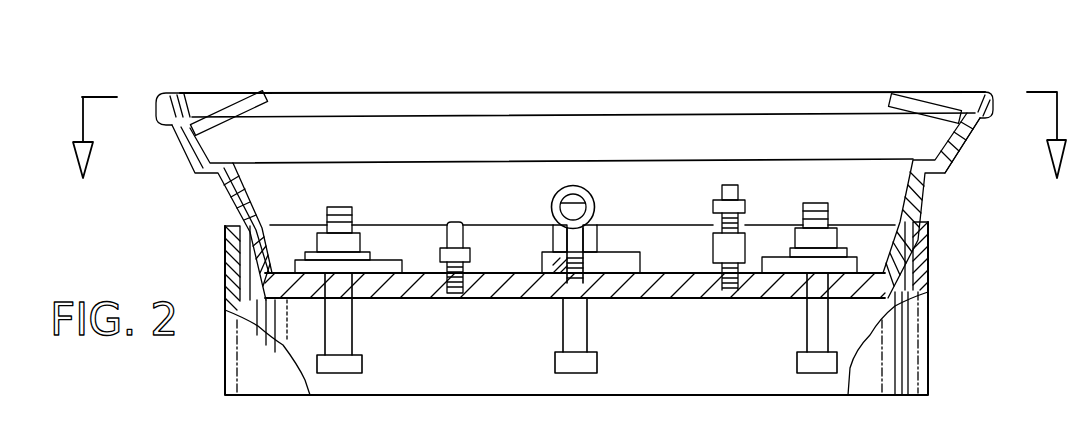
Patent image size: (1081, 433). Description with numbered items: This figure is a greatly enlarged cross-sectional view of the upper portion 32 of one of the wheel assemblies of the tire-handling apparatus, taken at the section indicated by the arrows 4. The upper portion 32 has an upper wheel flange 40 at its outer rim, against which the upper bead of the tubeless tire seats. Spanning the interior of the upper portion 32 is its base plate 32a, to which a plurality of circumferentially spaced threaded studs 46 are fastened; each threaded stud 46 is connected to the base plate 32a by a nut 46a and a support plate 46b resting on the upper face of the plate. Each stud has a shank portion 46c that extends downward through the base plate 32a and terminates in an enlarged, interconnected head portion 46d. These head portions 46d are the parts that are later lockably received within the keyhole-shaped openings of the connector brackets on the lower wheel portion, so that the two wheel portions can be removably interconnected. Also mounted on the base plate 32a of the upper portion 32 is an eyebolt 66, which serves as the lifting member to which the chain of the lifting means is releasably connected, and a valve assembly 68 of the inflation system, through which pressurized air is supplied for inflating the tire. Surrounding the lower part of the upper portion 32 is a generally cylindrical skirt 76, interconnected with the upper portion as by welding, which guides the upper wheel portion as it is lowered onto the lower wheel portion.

The section line 4- 4 is at (569, 118).
The upper portion of wheel assembly 32 is at (780, 86).
The base plate 32a is at (665, 277).
The upper wheel flange 40 is at (972, 124).
The threaded stud 46 is at (340, 207).
The nut 46a is at (322, 235).
The support plate 46b is at (380, 258).
The shank portion 46c is at (340, 318).
The head portion 46d is at (360, 363).
The eyebolt 66 is at (573, 186).
The valve assembly 68 is at (730, 185).
The skirt 76 is at (928, 347).